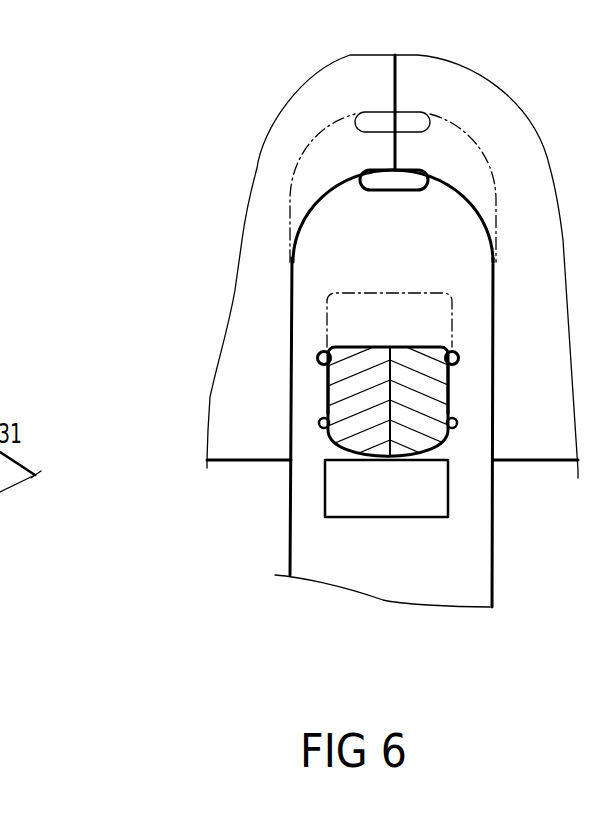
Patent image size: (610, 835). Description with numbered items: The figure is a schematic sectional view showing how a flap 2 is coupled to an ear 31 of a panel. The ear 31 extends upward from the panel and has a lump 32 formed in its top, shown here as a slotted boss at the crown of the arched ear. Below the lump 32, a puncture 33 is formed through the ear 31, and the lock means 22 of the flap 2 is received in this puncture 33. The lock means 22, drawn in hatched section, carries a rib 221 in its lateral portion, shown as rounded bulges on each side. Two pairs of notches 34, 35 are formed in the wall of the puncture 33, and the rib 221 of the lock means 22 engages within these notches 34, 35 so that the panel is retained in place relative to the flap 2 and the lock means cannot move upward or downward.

The flap 2 is at (238, 292).
The lock means 22 is at (370, 447).
The rib 221 is at (323, 351).
The ear 31 is at (359, 580).
The lump 32 is at (358, 182).
The puncture 33 is at (342, 495).
The notch 34 is at (319, 425).
The notch 35 is at (325, 368).